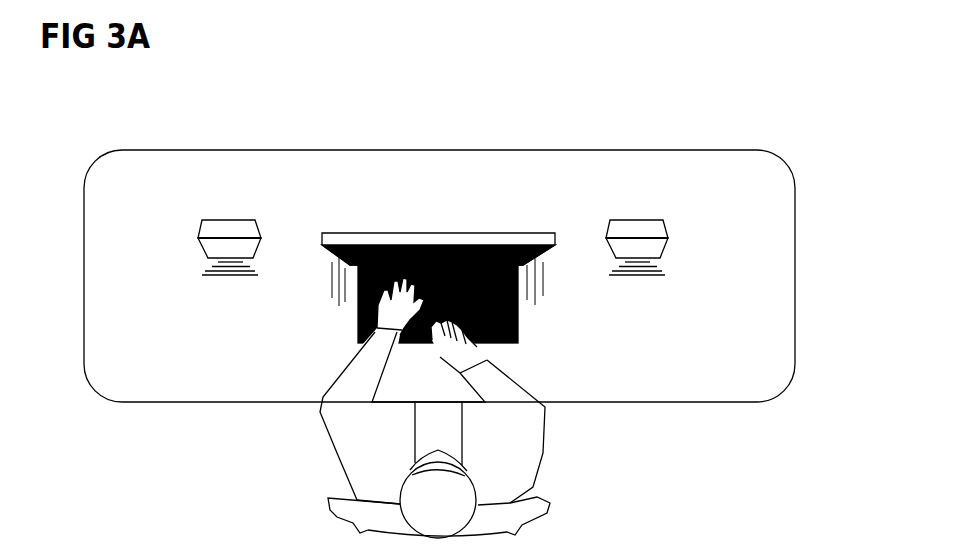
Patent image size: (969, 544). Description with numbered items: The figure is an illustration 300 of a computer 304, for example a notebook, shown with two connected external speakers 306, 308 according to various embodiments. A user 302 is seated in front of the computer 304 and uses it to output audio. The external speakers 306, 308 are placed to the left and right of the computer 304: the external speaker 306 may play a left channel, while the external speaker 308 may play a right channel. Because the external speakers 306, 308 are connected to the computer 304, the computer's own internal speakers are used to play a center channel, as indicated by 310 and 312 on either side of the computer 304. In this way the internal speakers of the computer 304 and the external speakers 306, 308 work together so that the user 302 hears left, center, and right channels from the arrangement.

The illustration 300 is at (780, 108).
The user 302 is at (337, 450).
The computer 304 is at (420, 264).
The external speaker 306 is at (245, 231).
The external speaker 308 is at (641, 231).
The center channel indication 310 is at (337, 268).
The center channel indication 312 is at (552, 279).